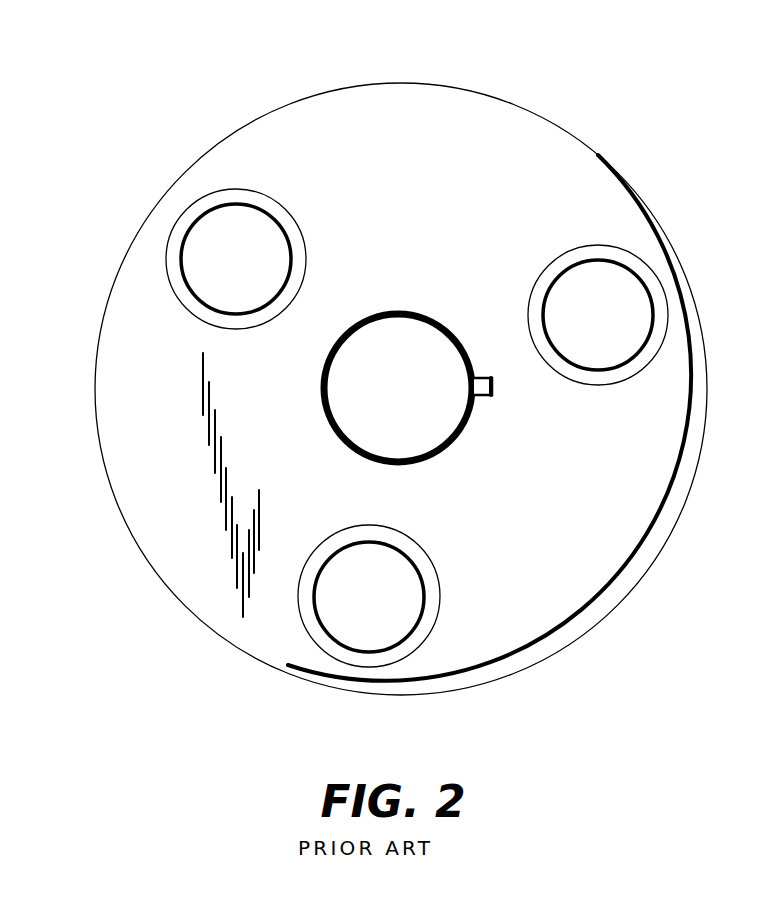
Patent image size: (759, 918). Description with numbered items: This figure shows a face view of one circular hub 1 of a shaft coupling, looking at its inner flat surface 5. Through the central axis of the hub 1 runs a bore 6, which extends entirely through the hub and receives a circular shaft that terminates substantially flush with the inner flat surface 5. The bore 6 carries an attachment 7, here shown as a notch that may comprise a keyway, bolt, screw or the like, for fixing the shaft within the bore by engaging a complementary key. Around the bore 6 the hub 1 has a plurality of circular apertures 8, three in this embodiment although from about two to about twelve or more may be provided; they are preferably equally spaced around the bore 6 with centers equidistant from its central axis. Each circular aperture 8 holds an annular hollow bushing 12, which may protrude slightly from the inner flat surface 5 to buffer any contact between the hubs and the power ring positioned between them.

The circular hub 1 is at (370, 97).
The inner flat surface 5 is at (458, 208).
The bore 6 is at (382, 310).
The attachment 7 is at (484, 397).
The circular aperture 8 is at (223, 188).
The annular hollow bushing 12 is at (188, 213).